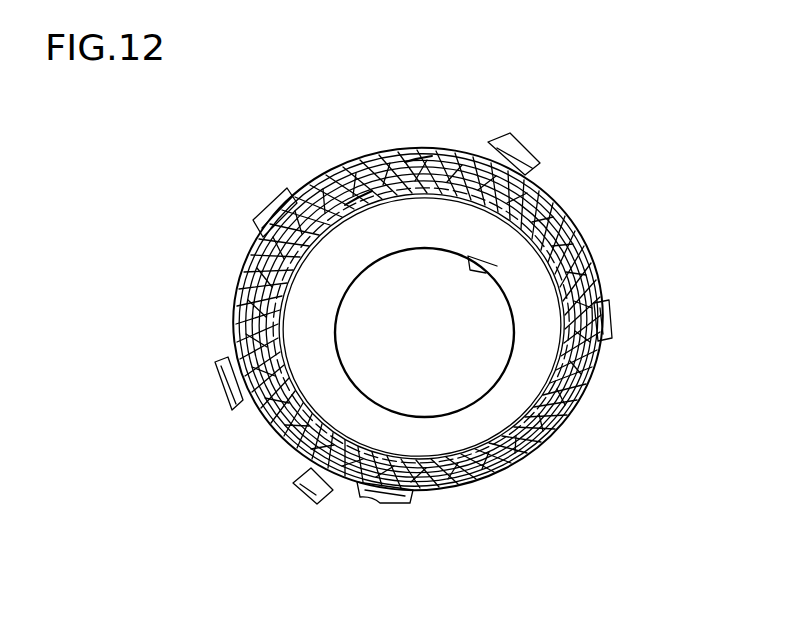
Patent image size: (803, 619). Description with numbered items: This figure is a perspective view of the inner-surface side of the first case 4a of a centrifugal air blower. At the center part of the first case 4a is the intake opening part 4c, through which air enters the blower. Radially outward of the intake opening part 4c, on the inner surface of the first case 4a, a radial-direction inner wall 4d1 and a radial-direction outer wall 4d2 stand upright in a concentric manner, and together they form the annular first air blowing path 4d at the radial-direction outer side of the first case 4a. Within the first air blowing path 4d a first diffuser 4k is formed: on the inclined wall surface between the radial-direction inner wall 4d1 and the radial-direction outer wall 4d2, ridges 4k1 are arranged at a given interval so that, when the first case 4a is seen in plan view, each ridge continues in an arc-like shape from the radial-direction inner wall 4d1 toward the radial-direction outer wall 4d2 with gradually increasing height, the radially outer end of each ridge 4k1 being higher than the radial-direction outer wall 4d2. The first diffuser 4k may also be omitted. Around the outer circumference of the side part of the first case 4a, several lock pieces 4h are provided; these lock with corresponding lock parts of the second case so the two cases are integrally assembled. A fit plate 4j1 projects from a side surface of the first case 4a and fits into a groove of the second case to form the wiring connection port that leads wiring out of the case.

The first case 4a is at (580, 384).
The intake opening part 4c is at (472, 263).
The first air blowing path 4d is at (584, 230).
The radial-direction inner wall 4d1 is at (369, 198).
The radial-direction outer wall 4d2 is at (418, 154).
The lock piece 4h is at (273, 203).
The fit plate 4j1 is at (295, 487).
The first diffuser 4k is at (236, 307).
The ridges 4k1 is at (252, 268).